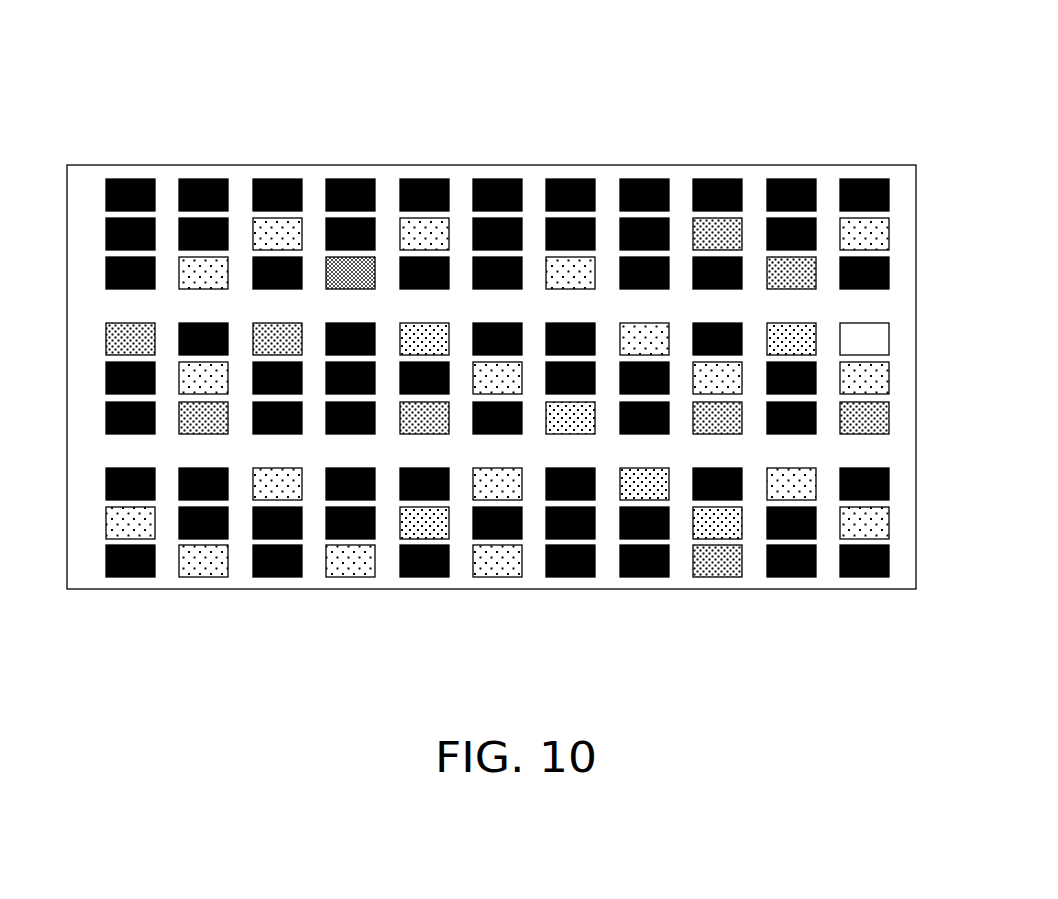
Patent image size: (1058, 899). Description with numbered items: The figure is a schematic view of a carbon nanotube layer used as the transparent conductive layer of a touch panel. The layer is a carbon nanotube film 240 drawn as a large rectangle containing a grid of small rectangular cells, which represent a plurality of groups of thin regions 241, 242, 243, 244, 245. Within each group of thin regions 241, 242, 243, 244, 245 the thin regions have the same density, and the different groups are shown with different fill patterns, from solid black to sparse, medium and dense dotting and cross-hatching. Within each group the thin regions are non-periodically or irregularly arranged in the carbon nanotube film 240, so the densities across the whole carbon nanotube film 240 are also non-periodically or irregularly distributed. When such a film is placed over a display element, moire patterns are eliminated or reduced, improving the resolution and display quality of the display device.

The carbon nanotube film 240 is at (445, 98).
The group of thin regions 241 is at (136, 180).
The group of thin regions 242 is at (280, 233).
The group of thin regions 243 is at (357, 270).
The group of thin regions 244 is at (722, 235).
The group of thin regions 245 is at (853, 228).